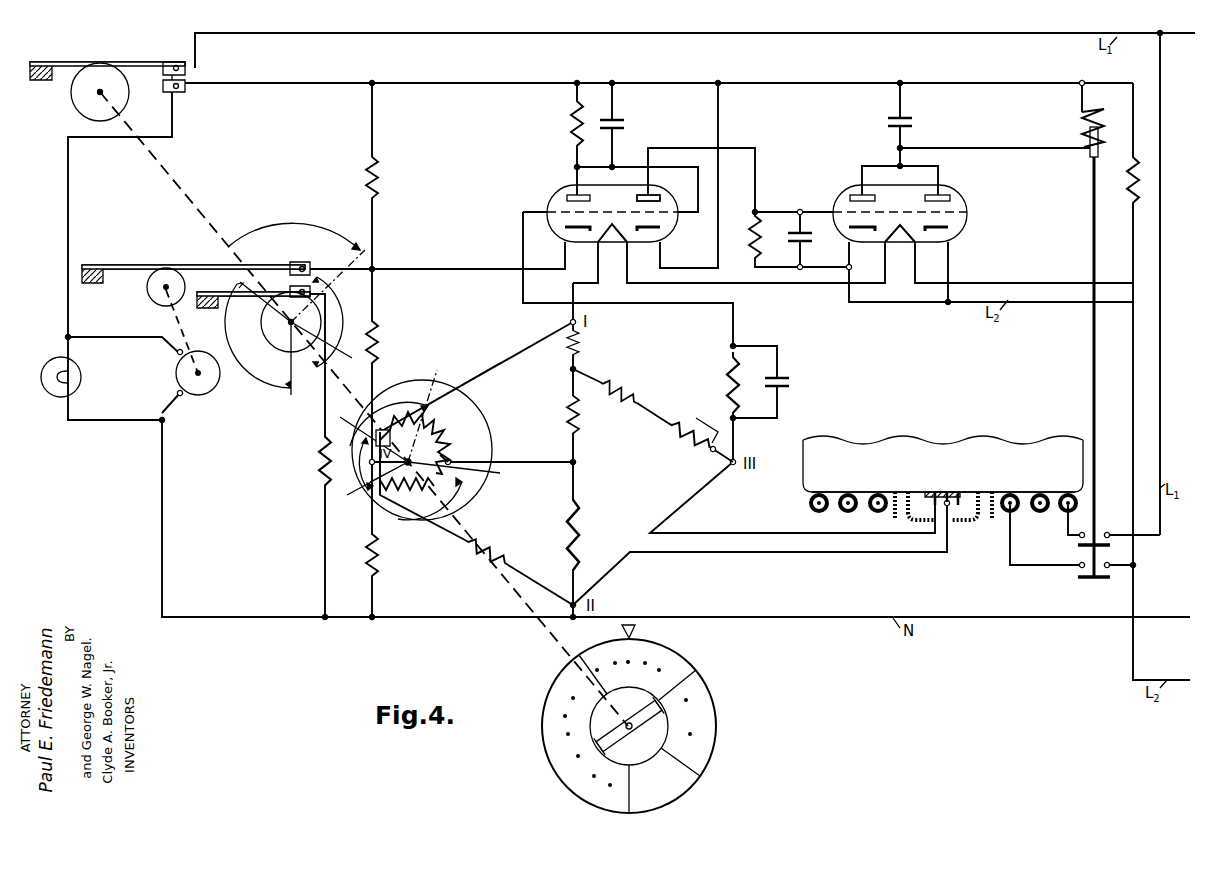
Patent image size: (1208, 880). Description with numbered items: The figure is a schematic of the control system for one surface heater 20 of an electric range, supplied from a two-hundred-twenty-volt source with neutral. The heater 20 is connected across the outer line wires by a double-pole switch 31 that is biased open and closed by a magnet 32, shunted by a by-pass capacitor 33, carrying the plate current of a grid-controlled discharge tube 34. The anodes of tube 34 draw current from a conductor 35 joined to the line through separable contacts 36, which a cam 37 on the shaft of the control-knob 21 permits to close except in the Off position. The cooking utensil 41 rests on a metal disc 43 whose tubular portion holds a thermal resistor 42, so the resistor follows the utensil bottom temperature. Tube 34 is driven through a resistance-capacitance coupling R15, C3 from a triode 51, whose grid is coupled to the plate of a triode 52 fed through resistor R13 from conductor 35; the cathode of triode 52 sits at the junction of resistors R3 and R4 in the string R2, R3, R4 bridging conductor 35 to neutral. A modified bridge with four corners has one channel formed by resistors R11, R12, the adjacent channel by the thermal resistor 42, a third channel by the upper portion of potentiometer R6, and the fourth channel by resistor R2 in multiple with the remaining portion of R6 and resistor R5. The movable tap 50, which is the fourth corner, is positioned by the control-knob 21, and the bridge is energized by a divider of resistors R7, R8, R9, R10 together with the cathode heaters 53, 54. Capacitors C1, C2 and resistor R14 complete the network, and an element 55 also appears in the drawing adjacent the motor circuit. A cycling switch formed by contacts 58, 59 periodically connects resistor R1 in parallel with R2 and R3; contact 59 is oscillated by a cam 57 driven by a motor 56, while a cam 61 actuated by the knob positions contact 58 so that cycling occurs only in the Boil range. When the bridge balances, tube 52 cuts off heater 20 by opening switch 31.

The heater 20 is at (845, 508).
The control-knob 21 is at (560, 684).
The double-pole switch 31 is at (1098, 536).
The magnet 32 is at (1085, 131).
The by-pass capacitor 33 is at (912, 124).
The grid controlled electron discharge tube 34 is at (890, 222).
The conductor 35 is at (498, 84).
The separable contacts 36 is at (170, 62).
The cam 37 is at (80, 110).
The cooking utensil 41 is at (850, 448).
The thermal resistor 42 is at (946, 498).
The disc 43 is at (959, 494).
The movable tap 50 is at (424, 440).
The triode 51 is at (670, 226).
The triode 52 is at (613, 222).
The cathode heater 53 is at (906, 246).
The cathode heater 54 is at (615, 244).
The signal lamp 55 is at (78, 382).
The motor 56 is at (205, 396).
The cam 57 is at (150, 298).
The contact 58 is at (290, 289).
The contact 59 is at (296, 262).
The cam 61 is at (284, 352).
The resistor R1 is at (320, 463).
The resistor R2 is at (378, 568).
The resistor R3 is at (378, 345).
The resistor R4 is at (367, 176).
The resistor R5 is at (488, 558).
The potentiometer R6 is at (442, 455).
The resistor R7 is at (580, 521).
The resistor R8 is at (580, 427).
The resistor R9 is at (579, 340).
The dropping resistor R10 is at (1126, 210).
The resistor R11 is at (686, 442).
The resistor R12 is at (619, 392).
The resistor R13 is at (571, 130).
The resistor R14 is at (728, 380).
The resistor R15 is at (760, 228).
The capacitor C1 is at (790, 385).
The capacitor C2 is at (626, 125).
The capacitor C3 is at (812, 240).